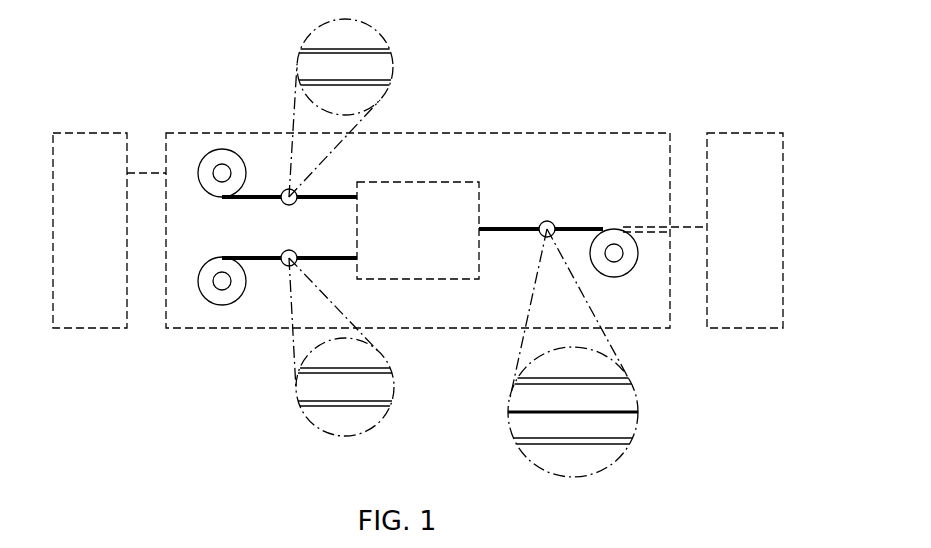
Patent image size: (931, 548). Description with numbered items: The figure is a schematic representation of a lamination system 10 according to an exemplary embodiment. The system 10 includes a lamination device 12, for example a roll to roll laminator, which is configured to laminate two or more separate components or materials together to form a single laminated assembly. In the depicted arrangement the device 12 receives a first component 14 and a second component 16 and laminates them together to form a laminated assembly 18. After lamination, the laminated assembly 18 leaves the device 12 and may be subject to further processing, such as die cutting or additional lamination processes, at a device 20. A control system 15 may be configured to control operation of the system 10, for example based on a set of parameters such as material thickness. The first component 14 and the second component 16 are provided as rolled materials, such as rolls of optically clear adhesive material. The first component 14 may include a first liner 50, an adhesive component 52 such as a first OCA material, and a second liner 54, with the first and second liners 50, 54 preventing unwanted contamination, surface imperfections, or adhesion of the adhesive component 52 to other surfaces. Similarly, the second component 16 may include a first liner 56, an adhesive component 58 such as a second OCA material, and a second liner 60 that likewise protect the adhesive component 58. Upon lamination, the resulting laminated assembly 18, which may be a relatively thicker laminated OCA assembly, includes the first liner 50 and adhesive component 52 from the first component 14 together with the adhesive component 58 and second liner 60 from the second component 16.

The lamination system 10 is at (533, 98).
The lamination device 12 is at (457, 182).
The first component 14 is at (268, 196).
The control system 15 is at (90, 96).
The second component 16 is at (268, 259).
The laminated assembly 18 is at (513, 227).
The device 20 is at (727, 95).
The first liner 50 is at (358, 49).
The adhesive component 52 is at (318, 60).
The second liner 54 is at (368, 83).
The first liner 56 is at (373, 370).
The adhesive component 58 is at (365, 392).
The second liner 60 is at (313, 407).